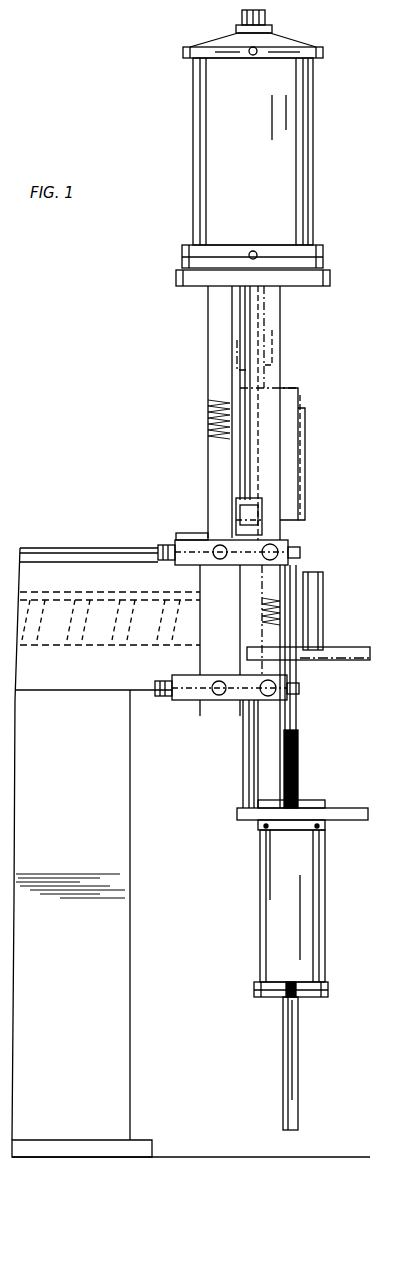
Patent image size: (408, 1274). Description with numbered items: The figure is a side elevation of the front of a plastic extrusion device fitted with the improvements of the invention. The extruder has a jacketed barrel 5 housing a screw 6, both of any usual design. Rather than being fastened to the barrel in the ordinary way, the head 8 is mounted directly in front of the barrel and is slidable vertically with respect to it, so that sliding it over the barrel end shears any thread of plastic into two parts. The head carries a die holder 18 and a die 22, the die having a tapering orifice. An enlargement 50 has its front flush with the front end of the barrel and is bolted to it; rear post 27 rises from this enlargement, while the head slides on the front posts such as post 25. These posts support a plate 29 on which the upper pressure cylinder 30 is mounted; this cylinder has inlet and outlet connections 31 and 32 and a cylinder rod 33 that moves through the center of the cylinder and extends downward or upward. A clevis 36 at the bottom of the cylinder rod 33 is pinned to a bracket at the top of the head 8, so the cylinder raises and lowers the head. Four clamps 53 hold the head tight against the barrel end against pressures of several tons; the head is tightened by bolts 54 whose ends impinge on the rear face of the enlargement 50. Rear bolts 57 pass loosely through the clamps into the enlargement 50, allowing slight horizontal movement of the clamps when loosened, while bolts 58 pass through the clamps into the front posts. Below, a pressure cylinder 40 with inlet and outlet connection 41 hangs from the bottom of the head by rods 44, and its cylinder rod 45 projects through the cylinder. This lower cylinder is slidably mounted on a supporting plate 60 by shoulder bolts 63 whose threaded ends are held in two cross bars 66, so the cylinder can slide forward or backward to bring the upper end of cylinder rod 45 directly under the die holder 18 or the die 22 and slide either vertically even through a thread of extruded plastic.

The jacketed barrel 5 is at (62, 548).
The screw 6 is at (90, 590).
The head 8 is at (302, 566).
The die holder 18 is at (300, 662).
The die 22 is at (322, 600).
The post 25 is at (285, 438).
The post 27 is at (206, 466).
The plate 29 is at (182, 278).
The upper pressure cylinder 30 is at (208, 112).
The inlet and outlet connection 31 is at (252, 251).
The inlet and outlet connection 32 is at (250, 49).
The cylinder rod 33 is at (247, 330).
The clevis 36 is at (244, 505).
The pressure cylinder 40 is at (318, 935).
The inlet and outlet connection 41 is at (288, 988).
The rods 44 is at (250, 728).
The cylinder rod 45 is at (300, 750).
The enlargement 50 is at (192, 540).
The clamps 53 is at (282, 548).
The bolts 54 is at (158, 548).
The rear bolts 57 is at (220, 545).
The bolts 58 is at (300, 560).
The supporting plate 60 is at (355, 820).
The shoulder bolts 63 is at (262, 828).
The cross bars 66 is at (312, 806).